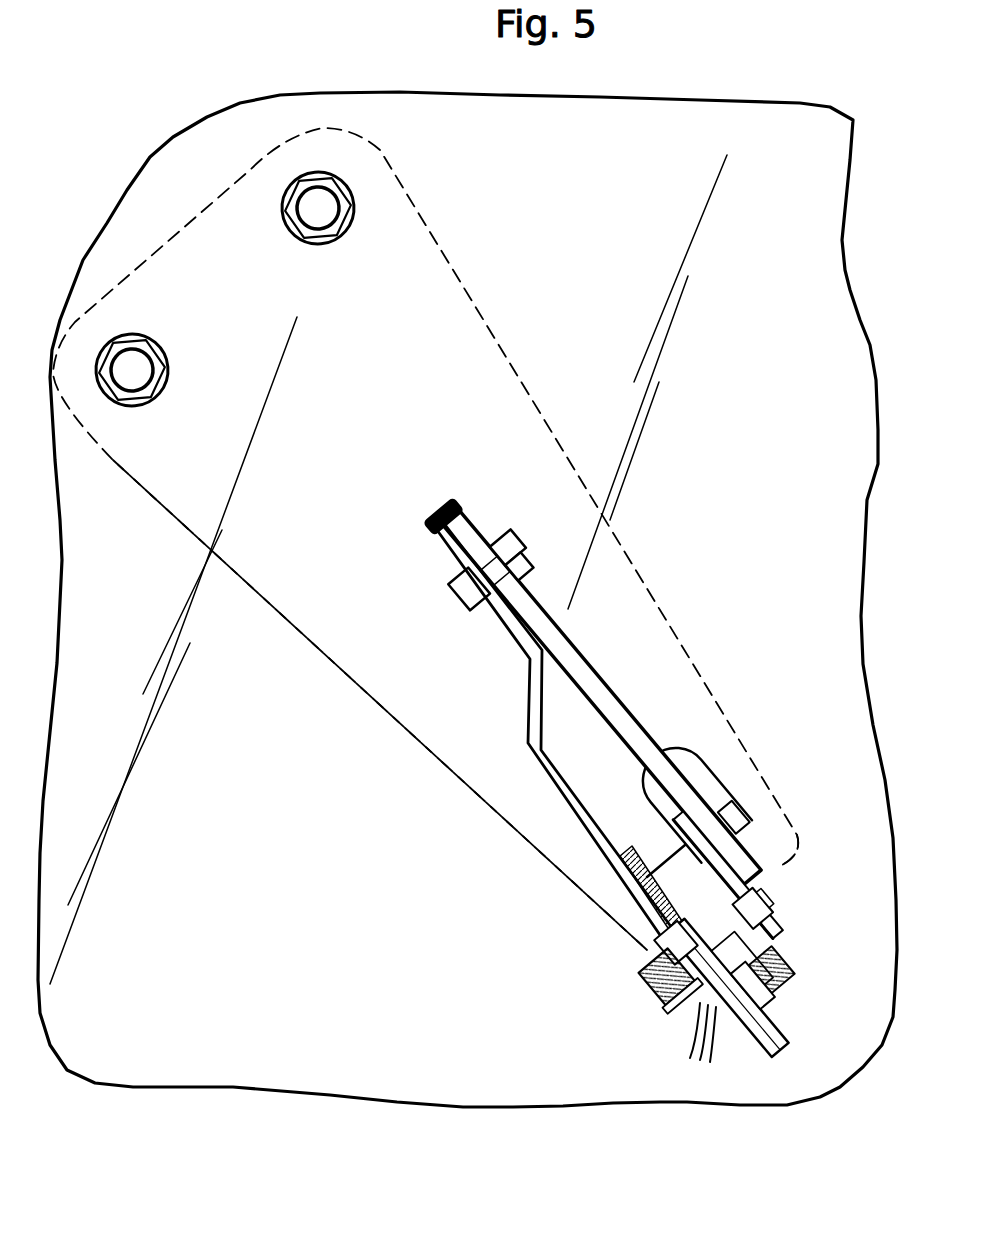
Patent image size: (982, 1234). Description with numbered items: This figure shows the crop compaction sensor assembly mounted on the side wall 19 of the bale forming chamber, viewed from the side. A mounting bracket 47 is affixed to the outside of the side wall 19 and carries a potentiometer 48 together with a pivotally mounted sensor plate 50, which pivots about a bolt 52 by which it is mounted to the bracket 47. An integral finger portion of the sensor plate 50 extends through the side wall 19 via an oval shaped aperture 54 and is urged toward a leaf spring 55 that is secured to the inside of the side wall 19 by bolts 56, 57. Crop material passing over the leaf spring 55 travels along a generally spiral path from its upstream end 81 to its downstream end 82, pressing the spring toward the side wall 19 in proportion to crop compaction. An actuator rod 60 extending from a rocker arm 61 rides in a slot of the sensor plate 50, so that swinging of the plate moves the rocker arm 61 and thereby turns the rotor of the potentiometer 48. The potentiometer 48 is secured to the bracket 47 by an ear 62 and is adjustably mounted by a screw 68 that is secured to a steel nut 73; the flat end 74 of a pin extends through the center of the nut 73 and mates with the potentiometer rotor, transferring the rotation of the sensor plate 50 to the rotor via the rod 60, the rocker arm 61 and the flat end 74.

The side wall 19 is at (288, 834).
The mounting bracket 47 is at (587, 807).
The potentiometer 48 is at (643, 973).
The sensor plate 50 is at (607, 683).
The bolt 52 is at (523, 537).
The oval shaped aperture 54 is at (683, 750).
The leaf spring 55 is at (320, 647).
The bolt 56 is at (130, 372).
The bolt 57 is at (317, 210).
The actuator rod 60 is at (710, 800).
The rocker arm 61 is at (747, 857).
The ear 62 is at (727, 1007).
The screw 68 is at (683, 1023).
The steel nut 73 is at (777, 948).
The flat end 74 is at (657, 988).
The upstream end 81 is at (212, 205).
The downstream end 82 is at (790, 873).